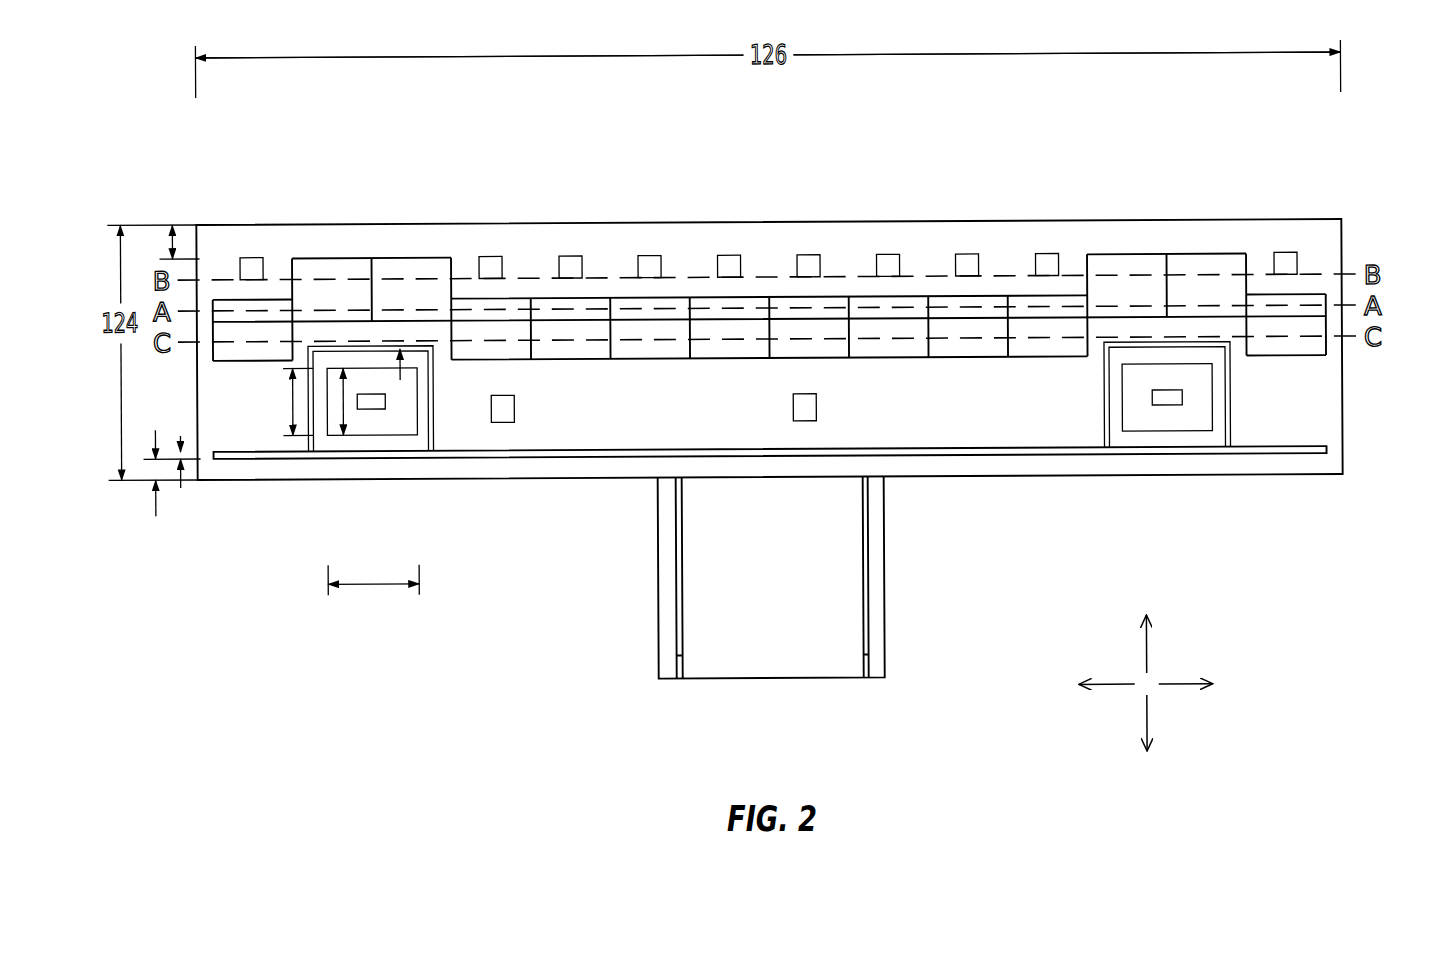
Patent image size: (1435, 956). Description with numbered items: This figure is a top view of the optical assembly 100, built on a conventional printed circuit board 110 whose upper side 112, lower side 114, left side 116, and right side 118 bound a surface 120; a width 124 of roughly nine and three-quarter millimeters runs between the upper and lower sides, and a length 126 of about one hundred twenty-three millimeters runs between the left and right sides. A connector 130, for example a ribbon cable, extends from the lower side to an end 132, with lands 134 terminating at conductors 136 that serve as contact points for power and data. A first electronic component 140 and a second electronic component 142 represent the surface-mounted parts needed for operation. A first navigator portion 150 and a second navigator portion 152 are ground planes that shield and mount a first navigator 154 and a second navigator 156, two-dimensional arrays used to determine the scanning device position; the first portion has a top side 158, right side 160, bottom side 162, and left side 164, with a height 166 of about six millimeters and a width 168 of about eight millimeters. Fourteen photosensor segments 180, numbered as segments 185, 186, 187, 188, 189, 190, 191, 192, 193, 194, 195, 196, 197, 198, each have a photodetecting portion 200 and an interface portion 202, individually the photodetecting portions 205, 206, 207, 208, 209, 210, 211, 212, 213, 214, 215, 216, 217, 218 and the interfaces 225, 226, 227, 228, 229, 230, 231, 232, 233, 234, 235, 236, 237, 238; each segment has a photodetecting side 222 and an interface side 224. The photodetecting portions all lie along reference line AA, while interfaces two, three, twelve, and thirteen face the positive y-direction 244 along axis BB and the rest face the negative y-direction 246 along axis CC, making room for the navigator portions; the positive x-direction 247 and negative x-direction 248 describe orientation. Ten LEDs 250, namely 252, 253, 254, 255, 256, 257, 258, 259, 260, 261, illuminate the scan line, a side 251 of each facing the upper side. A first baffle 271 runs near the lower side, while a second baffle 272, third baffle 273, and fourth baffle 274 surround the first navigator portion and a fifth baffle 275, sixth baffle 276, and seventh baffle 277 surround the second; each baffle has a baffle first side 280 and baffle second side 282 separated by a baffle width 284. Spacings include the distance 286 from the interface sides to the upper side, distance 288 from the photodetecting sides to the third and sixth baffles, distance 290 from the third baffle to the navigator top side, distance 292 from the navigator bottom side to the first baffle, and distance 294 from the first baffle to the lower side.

The optical assembly 100 is at (973, 126).
The printed circuit board 110 is at (1333, 478).
The upper side 112 is at (1340, 222).
The lower side 114 is at (1310, 478).
The left side 116 is at (197, 380).
The right side 118 is at (1344, 440).
The surface 120 is at (1045, 478).
The width 124 is at (119, 322).
The length 126 is at (768, 54).
The connector 130 is at (897, 580).
The end 132 is at (771, 680).
The lands 134 is at (870, 632).
The conductor 136 is at (870, 663).
The first electronic component 140 is at (506, 424).
The second electronic component 142 is at (803, 424).
The first navigator portion 150 is at (432, 408).
The second navigator portion 152 is at (1138, 435).
The first navigator 154 is at (364, 435).
The second navigator 156 is at (1167, 409).
The top side 158 is at (433, 385).
The right side 160 is at (406, 430).
The bottom side 162 is at (372, 408).
The left side 164 is at (332, 432).
The height 166 is at (291, 405).
The width 168 is at (373, 586).
The photosensor segment 180 is at (1334, 320).
The segment number one 185 is at (215, 297).
The segment number two 186 is at (301, 255).
The segment number three 187 is at (400, 309).
The segment number four 188 is at (465, 295).
The segment number five 189 is at (547, 295).
The segment number six 190 is at (627, 295).
The segment number seven 191 is at (706, 295).
The segment number eight 192 is at (785, 295).
The segment number nine 193 is at (864, 295).
The segment number ten 194 is at (943, 295).
The segment number eleven 195 is at (1022, 295).
The segment number twelve 196 is at (1128, 254).
The segment number thirteen 197 is at (1204, 254).
The segment number fourteen 198 is at (1257, 362).
The photodetecting portion 200 is at (1334, 293).
The interface portion 202 is at (1335, 348).
The photodetecting portion number one 205 is at (222, 297).
The photodetecting portion number two 206 is at (387, 255).
The photodetecting portion number three 207 is at (452, 297).
The photodetecting portion number four 208 is at (531, 297).
The photodetecting portion number five 209 is at (567, 320).
The photodetecting portion number six 210 is at (628, 320).
The photodetecting portion number seven 211 is at (703, 320).
The photodetecting portion number eight 212 is at (790, 320).
The photodetecting portion number nine 213 is at (880, 320).
The photodetecting portion number ten 214 is at (943, 320).
The photodetecting portion number eleven 215 is at (1022, 320).
The photodetecting portion number twelve 216 is at (1100, 295).
The photodetecting portion number thirteen 217 is at (1190, 295).
The photodetecting portion number fourteen 218 is at (1262, 295).
The photodetecting side 222 is at (846, 296).
The interface side 224 is at (1007, 360).
The interface number one 225 is at (226, 360).
The interface number two 226 is at (343, 343).
The interface number three 227 is at (443, 255).
The interface number four 228 is at (520, 360).
The interface number five 229 is at (590, 362).
The interface number six 230 is at (650, 362).
The interface number seven 231 is at (730, 362).
The interface number eight 232 is at (828, 362).
The interface number nine 233 is at (908, 362).
The interface number ten 234 is at (970, 362).
The interface number eleven 235 is at (1055, 362).
The interface number twelve 236 is at (1105, 256).
The interface number thirteen 237 is at (1243, 256).
The interface number fourteen 238 is at (1285, 358).
The positive y-direction 244 is at (1142, 643).
The negative y-direction 246 is at (1147, 718).
The positive x-direction 247 is at (1182, 683).
The negative x-direction 248 is at (1105, 690).
The LEDs 250 is at (1312, 258).
The side 251 is at (228, 279).
The first LED 252 is at (252, 255).
The second LED 253 is at (493, 255).
The third LED 254 is at (573, 255).
The fourth LED 255 is at (650, 255).
The fifth LED 256 is at (729, 255).
The sixth LED 257 is at (809, 255).
The seventh LED 258 is at (888, 255).
The eighth LED 259 is at (967, 255).
The ninth LED 260 is at (1047, 255).
The tenth LED 261 is at (1290, 255).
The first baffle 271 is at (620, 457).
The second baffle 272 is at (308, 442).
The third baffle 273 is at (323, 343).
The fourth baffle 274 is at (438, 433).
The fifth baffle 275 is at (1104, 435).
The sixth baffle 276 is at (1152, 330).
The seventh baffle 277 is at (1203, 433).
The baffle first side 280 is at (948, 450).
The baffle second side 282 is at (925, 456).
The baffle width 284 is at (180, 485).
The distance 286 is at (148, 222).
The distance 288 is at (433, 280).
The distance 290 is at (317, 277).
The distance 292 is at (343, 458).
The distance 294 is at (155, 513).